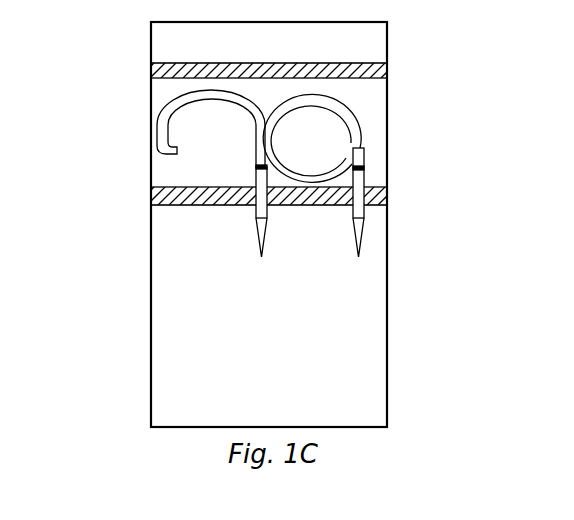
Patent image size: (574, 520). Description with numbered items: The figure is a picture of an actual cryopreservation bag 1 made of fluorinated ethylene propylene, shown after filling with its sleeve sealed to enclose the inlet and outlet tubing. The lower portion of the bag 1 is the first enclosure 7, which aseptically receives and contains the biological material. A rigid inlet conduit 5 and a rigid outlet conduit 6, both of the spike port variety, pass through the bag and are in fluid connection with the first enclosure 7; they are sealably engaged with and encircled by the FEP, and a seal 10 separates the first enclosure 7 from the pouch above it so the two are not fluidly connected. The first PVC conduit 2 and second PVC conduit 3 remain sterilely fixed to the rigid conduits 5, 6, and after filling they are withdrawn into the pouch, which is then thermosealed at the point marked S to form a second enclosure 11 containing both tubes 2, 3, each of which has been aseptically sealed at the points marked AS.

The FEP bag 1 is at (138, 345).
The first PVC conduit 2 is at (217, 88).
The second PVC conduit 3 is at (345, 102).
The rigid inlet conduit 5 is at (268, 200).
The rigid outlet conduit 6 is at (366, 194).
The first enclosure 7 is at (327, 352).
The seal 10 is at (153, 206).
The second enclosure 11 is at (190, 163).